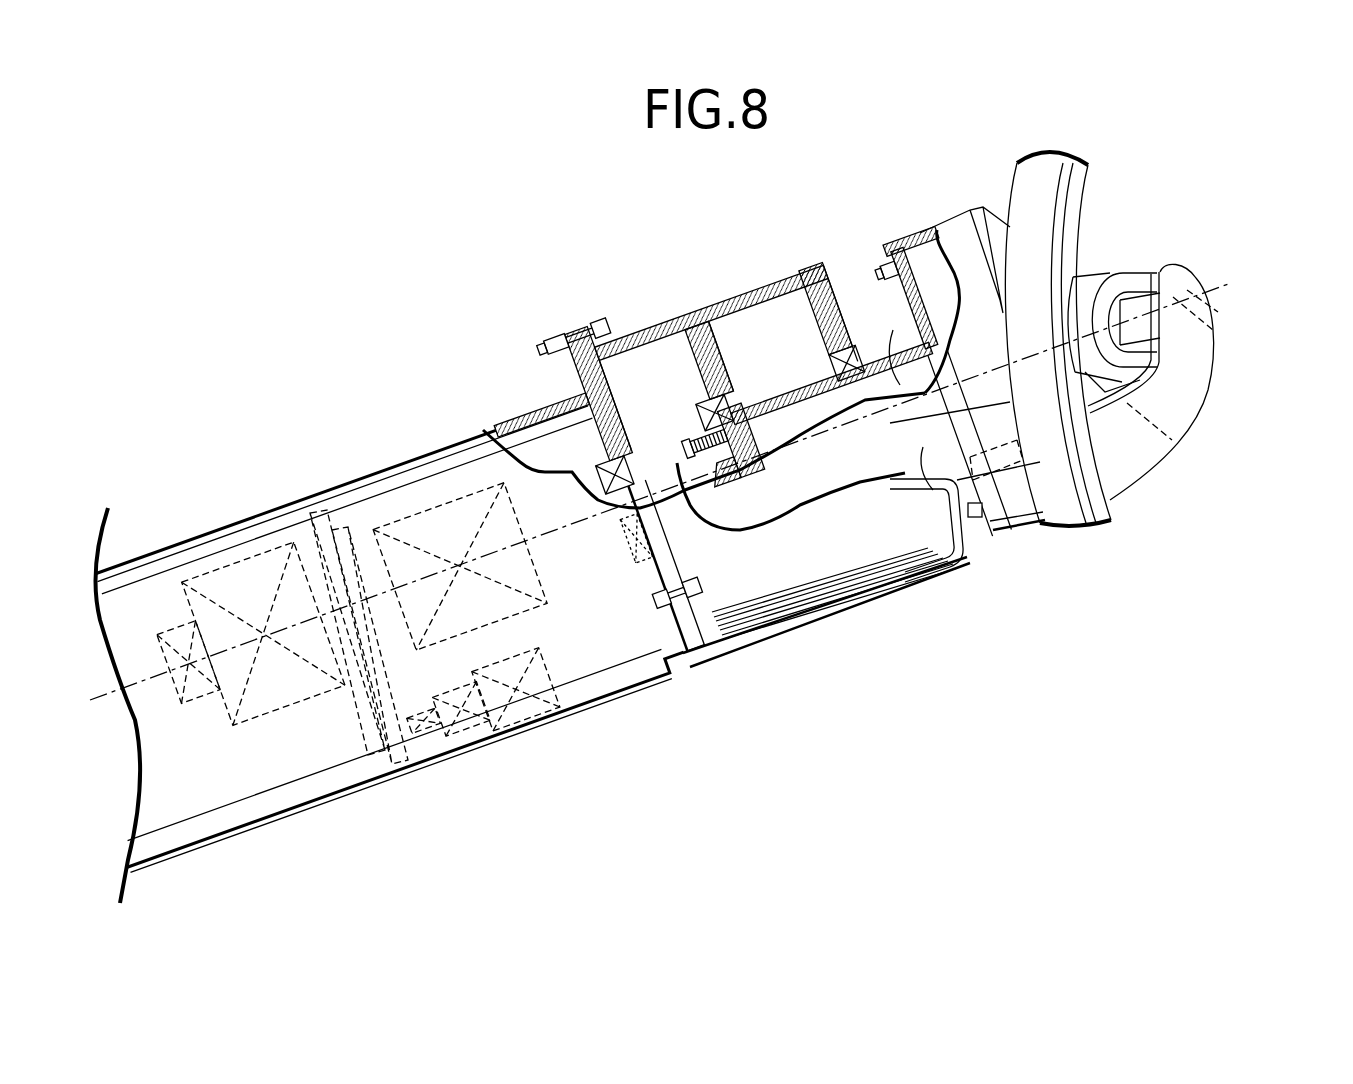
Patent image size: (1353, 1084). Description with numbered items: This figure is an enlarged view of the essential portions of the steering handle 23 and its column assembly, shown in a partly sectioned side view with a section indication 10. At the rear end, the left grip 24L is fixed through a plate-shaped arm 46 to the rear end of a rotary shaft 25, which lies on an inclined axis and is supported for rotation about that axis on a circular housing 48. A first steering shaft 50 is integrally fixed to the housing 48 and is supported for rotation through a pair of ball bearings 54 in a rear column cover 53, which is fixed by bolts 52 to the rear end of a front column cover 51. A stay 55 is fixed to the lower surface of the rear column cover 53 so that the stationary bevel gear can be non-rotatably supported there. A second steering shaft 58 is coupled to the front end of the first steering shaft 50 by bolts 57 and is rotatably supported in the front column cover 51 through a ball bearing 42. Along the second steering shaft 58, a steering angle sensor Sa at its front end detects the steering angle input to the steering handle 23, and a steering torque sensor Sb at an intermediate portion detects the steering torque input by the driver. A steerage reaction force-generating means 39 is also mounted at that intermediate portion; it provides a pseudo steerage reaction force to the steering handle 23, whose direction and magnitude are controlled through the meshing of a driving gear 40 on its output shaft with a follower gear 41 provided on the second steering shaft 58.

The section line / vehicle 10 is at (1243, 222).
The steering handle 23 is at (1143, 238).
The left grip 24L is at (1085, 172).
The rotary shaft 25 is at (1113, 290).
The steerage reaction force-generating means 39 is at (530, 703).
The driving gear 40 is at (407, 762).
The follower gear 41 is at (311, 518).
The ball bearing 42 is at (597, 465).
The plate-shaped arm 46 is at (1183, 400).
The circular housing 48 is at (957, 228).
The first steering shaft 50 is at (780, 400).
The front column cover 51 is at (378, 466).
The bolt 52 is at (603, 332).
The rear column cover 53 is at (730, 300).
The ball bearing 54 is at (835, 345).
The stay 55 is at (965, 565).
The bolt 57 is at (685, 455).
The second steering shaft 58 is at (577, 537).
The steering angle sensor Sa is at (244, 563).
The steering torque sensor Sb is at (432, 508).